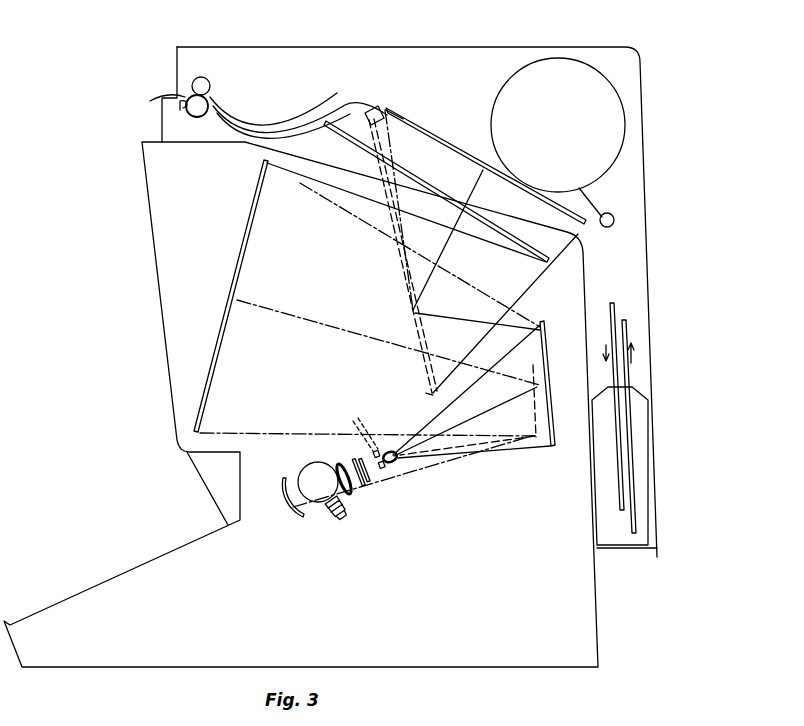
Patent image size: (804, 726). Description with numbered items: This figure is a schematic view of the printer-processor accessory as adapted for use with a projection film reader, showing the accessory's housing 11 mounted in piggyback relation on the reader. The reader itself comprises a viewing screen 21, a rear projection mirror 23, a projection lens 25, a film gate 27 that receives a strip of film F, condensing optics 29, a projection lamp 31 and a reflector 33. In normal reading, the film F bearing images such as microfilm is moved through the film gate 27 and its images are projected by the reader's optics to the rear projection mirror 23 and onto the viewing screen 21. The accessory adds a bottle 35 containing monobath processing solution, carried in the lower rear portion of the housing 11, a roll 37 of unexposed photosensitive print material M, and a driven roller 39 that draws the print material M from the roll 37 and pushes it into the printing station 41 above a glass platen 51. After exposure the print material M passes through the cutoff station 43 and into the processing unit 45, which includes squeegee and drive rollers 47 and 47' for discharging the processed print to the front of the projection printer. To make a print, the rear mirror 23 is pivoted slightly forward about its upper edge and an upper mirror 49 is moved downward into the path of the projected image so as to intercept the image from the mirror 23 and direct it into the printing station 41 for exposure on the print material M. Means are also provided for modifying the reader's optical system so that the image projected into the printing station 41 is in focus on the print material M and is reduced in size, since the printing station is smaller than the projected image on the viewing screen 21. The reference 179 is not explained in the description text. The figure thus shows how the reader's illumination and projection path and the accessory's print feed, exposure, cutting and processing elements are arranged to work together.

The housing 11 is at (637, 108).
The viewing screen 21 is at (214, 365).
The rear projection mirror 23 is at (547, 365).
The projection lens 25 is at (396, 461).
The film gate 27 is at (366, 476).
The condensing optics 29 is at (348, 492).
The projection lamp 31 is at (313, 472).
The reflector 33 is at (293, 514).
The bottle 35 is at (649, 513).
The roll 37 is at (558, 70).
The driven roller 39 is at (614, 219).
The printing station 41 is at (441, 139).
The cutoff station 43 is at (380, 108).
The processing unit 45 is at (259, 117).
The squeegee roller 47 is at (209, 60).
The drive roller 47' is at (168, 112).
The upper mirror 49 is at (415, 181).
The glass platen 51 is at (486, 172).
The aperture 179 is at (386, 468).
The photosensitive print material M is at (598, 200).
The film F is at (360, 462).